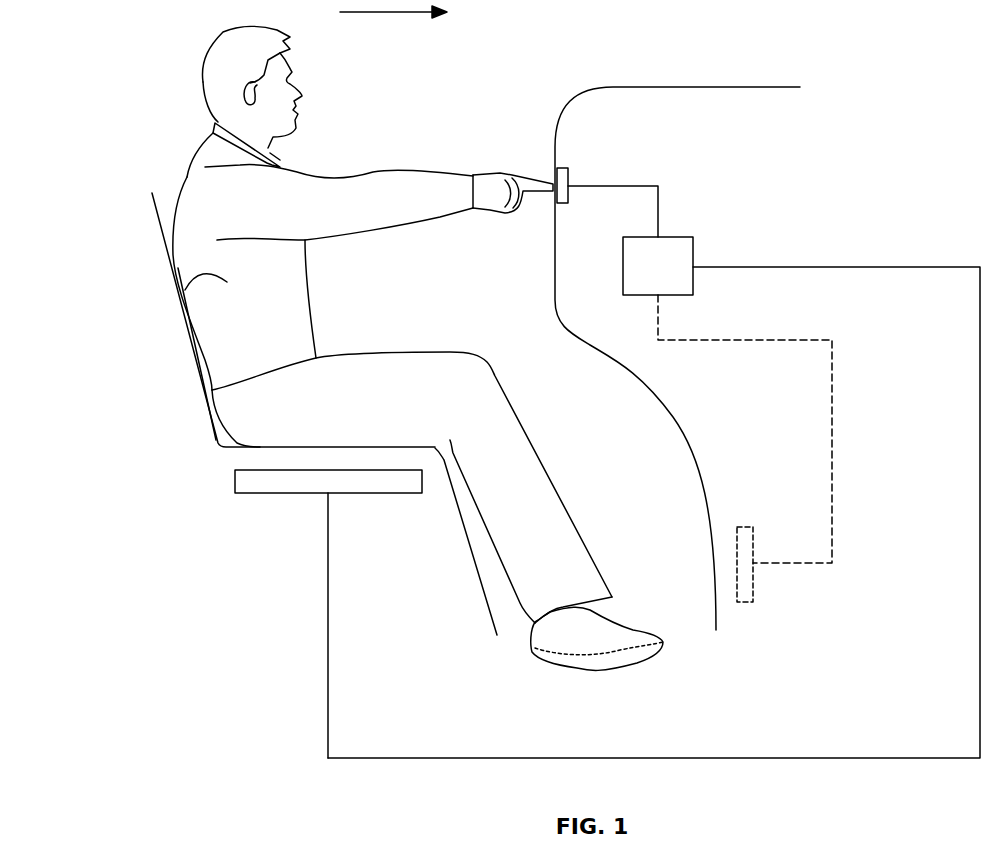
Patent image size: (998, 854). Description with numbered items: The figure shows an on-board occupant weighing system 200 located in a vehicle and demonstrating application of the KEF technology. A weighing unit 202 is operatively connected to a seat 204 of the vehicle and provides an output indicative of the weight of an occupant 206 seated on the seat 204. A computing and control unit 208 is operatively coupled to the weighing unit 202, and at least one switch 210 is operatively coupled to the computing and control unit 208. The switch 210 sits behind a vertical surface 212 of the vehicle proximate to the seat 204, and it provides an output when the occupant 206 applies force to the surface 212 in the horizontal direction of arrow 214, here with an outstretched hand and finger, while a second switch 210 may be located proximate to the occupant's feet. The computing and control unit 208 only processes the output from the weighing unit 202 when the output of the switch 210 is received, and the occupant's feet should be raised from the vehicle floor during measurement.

The on-board occupant weighing system 200 is at (115, 158).
The weighing unit 202 is at (268, 494).
The seat 204 is at (192, 333).
The occupant 206 is at (186, 285).
The computing and control unit 208 is at (683, 237).
The switch 210 is at (569, 178).
The vertical surface 212 is at (556, 177).
The arrow 214 is at (385, 14).